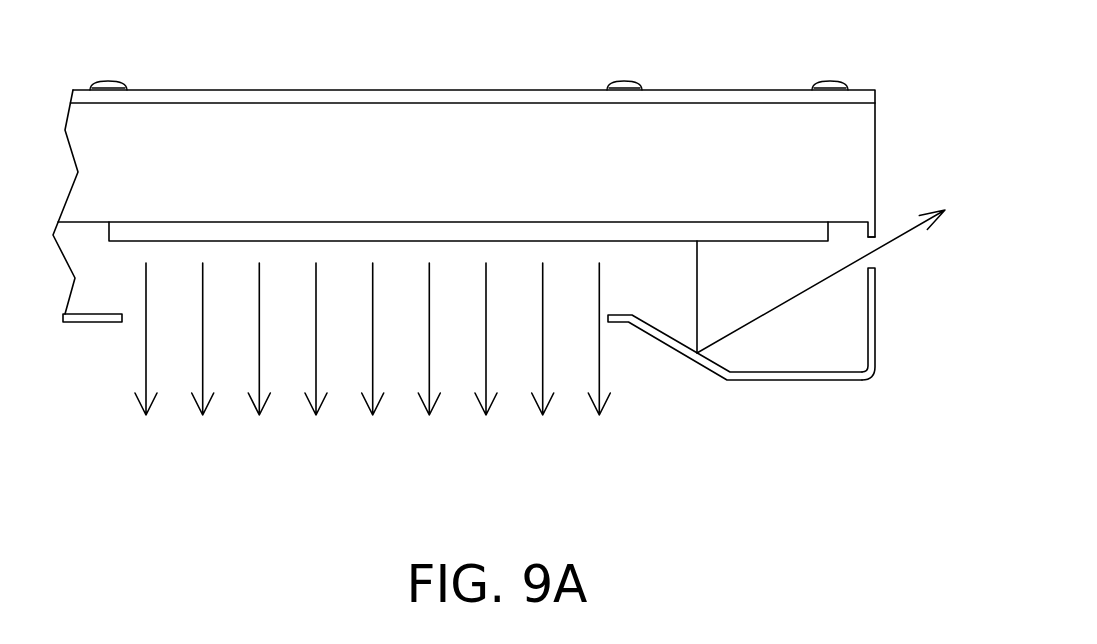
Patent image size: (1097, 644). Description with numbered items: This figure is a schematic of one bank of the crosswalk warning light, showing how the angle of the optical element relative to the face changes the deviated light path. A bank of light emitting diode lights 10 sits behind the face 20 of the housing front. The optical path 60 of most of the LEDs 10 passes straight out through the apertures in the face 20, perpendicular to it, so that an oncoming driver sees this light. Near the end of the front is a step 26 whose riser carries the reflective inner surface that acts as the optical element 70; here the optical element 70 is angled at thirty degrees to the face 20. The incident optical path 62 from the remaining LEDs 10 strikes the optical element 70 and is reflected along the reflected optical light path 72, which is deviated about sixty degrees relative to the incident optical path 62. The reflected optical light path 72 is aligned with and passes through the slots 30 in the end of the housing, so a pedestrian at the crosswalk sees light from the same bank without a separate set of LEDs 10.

The light emitting diode lights 10 is at (379, 230).
The face 20 is at (98, 322).
The step 26 is at (812, 382).
The slots 30 is at (870, 262).
The optical path 60 is at (617, 450).
The incident optical path 62 is at (700, 268).
The optical element 70 is at (672, 348).
The reflected optical light path 72 is at (800, 293).